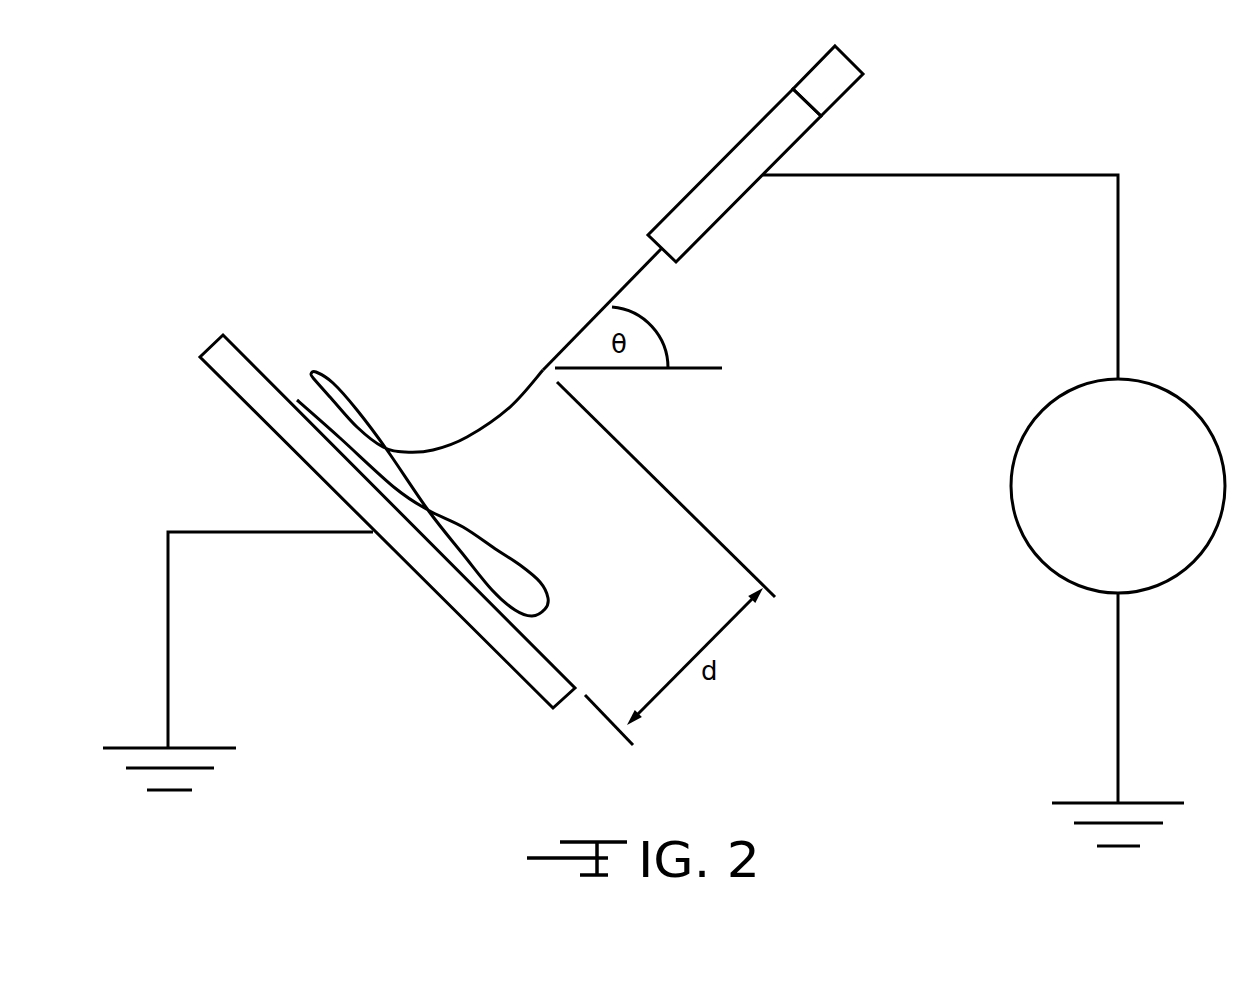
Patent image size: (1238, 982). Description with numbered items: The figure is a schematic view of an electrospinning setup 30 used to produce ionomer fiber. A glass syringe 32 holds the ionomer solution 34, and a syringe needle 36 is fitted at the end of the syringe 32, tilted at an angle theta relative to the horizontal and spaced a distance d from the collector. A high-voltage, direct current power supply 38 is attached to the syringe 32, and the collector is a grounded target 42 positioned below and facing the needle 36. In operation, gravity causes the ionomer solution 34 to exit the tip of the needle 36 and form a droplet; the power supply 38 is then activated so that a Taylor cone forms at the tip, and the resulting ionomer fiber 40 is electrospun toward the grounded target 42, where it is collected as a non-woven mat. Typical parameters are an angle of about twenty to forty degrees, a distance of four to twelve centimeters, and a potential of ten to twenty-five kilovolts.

The electrospinning setup 30 is at (402, 192).
The syringe 32 is at (883, 87).
The ionomer solution 34 is at (722, 173).
The syringe needle 36 is at (655, 287).
The power supply 38 is at (1129, 496).
The ionomer fiber 40 is at (461, 387).
The grounded target 42 is at (240, 432).